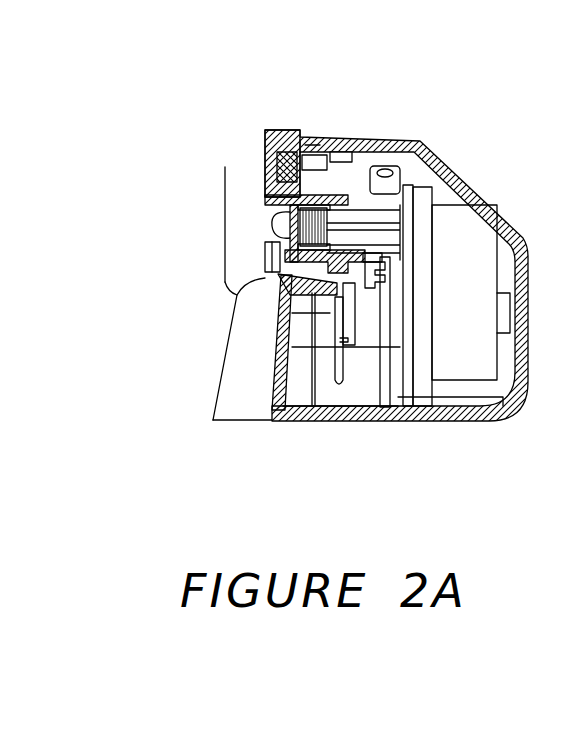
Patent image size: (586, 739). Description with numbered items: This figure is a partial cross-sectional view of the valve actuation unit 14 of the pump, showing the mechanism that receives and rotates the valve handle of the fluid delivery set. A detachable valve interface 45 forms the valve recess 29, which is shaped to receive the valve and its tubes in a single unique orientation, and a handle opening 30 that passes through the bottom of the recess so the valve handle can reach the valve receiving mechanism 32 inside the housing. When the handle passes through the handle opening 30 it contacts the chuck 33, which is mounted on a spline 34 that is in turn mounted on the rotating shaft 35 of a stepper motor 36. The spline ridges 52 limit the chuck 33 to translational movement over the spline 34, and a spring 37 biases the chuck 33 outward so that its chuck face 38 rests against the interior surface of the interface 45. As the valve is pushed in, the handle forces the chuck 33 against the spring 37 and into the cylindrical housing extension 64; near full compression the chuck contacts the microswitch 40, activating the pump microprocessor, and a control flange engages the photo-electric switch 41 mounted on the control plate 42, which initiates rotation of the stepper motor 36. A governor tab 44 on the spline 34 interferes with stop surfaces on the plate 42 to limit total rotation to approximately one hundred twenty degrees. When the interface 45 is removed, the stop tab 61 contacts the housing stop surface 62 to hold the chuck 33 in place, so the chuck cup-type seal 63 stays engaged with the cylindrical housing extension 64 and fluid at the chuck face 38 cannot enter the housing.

The valve actuation unit 14 is at (522, 205).
The valve recess 29 is at (250, 207).
The handle opening 30 is at (253, 165).
The valve receiving mechanism 32 is at (351, 167).
The chuck 33 is at (287, 135).
The spline 34 is at (403, 203).
The rotating shaft 35 is at (415, 212).
The stepper motor 36 is at (490, 327).
The spring 37 is at (268, 216).
The chuck face 38 is at (268, 258).
The microswitch 40 is at (347, 408).
The photo-electric switch 41 is at (393, 270).
The control plate 42 is at (357, 320).
The governor tab 44 is at (400, 195).
The valve interface 45 is at (265, 136).
The spline ridges 52 is at (388, 135).
The stop tab 61 is at (340, 135).
The housing stop surface 62 is at (322, 152).
The chuck cup-type seal 63 is at (262, 290).
The cylindrical housing extension 64 is at (277, 150).